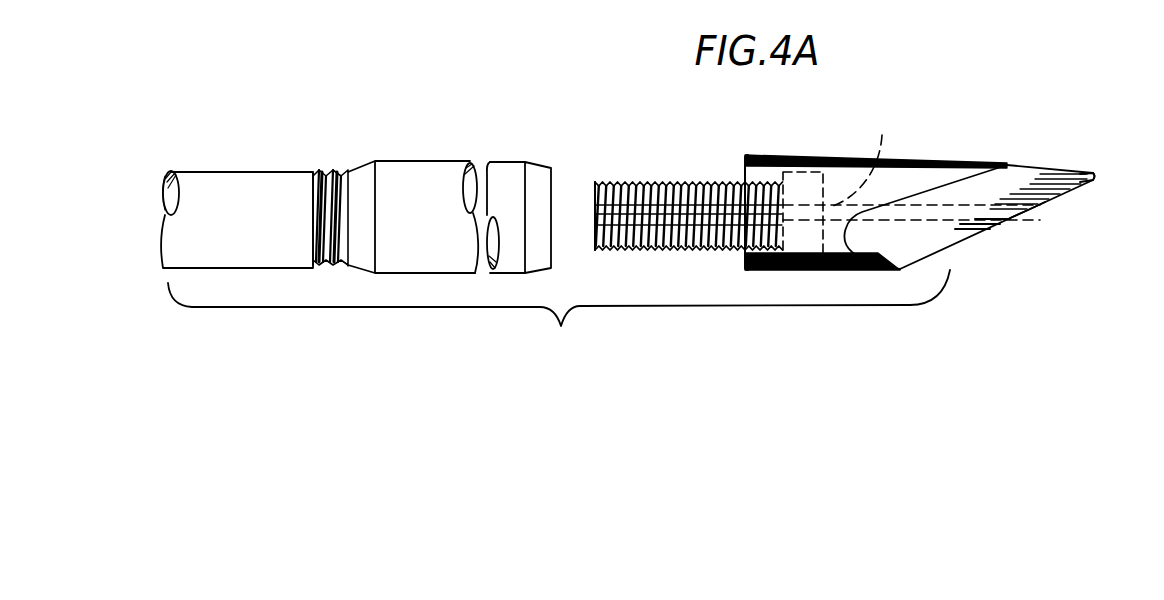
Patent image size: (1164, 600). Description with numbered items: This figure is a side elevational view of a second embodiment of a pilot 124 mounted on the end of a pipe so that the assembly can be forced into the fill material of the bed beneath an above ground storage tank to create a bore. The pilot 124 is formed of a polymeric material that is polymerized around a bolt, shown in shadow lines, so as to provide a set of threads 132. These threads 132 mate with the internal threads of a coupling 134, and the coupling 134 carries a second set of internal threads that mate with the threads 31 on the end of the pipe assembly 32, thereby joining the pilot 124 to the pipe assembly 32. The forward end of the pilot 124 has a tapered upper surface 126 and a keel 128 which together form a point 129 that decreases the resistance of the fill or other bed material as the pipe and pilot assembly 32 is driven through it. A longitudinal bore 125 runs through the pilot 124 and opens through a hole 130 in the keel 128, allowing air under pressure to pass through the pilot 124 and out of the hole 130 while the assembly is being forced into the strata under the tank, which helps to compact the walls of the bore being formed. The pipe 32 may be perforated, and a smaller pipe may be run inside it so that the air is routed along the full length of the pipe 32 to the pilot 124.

The pipe assembly 32 is at (208, 226).
The threads of pipe assembly 31 is at (316, 250).
The coupling 134 is at (395, 249).
The set of threads 132 is at (678, 183).
The pilot 124 is at (950, 174).
The longitudinal bore 125 is at (870, 155).
The tapered upper surface 126 is at (991, 163).
The keel 128 is at (972, 240).
The point 129 is at (1094, 180).
The hole 130 is at (1034, 213).